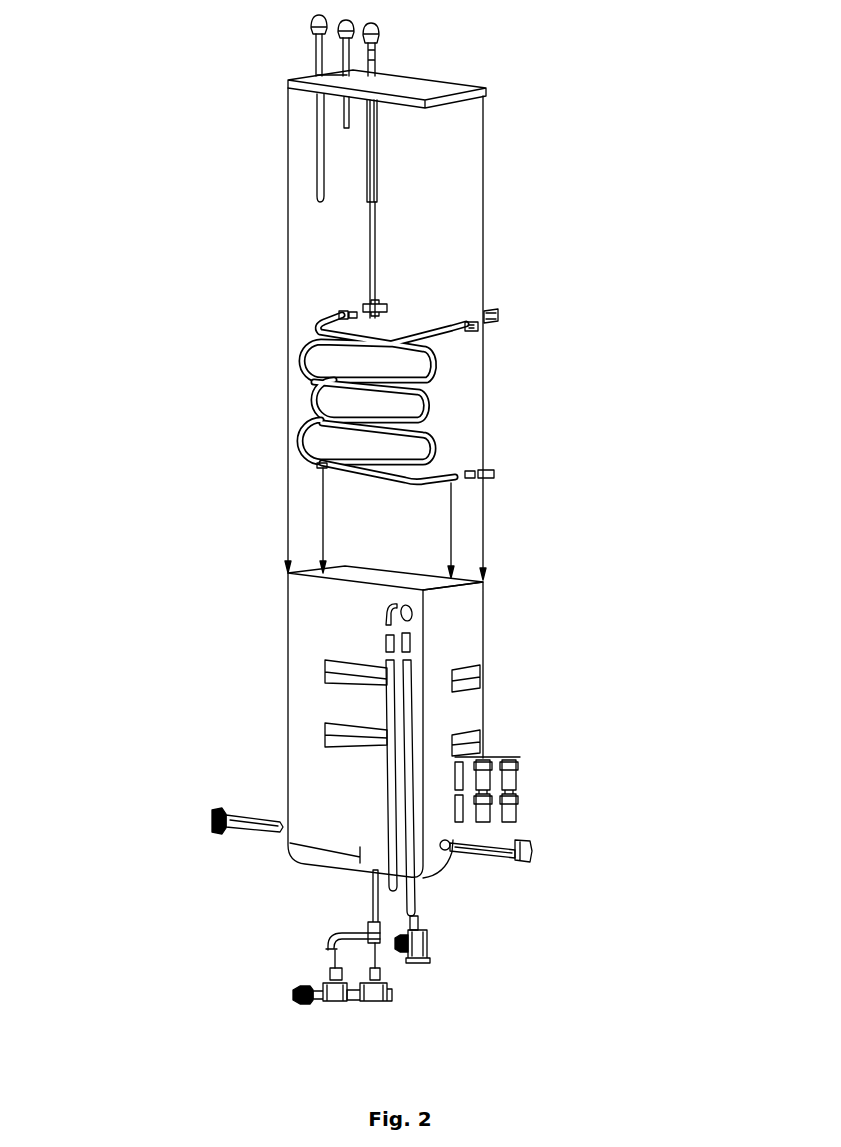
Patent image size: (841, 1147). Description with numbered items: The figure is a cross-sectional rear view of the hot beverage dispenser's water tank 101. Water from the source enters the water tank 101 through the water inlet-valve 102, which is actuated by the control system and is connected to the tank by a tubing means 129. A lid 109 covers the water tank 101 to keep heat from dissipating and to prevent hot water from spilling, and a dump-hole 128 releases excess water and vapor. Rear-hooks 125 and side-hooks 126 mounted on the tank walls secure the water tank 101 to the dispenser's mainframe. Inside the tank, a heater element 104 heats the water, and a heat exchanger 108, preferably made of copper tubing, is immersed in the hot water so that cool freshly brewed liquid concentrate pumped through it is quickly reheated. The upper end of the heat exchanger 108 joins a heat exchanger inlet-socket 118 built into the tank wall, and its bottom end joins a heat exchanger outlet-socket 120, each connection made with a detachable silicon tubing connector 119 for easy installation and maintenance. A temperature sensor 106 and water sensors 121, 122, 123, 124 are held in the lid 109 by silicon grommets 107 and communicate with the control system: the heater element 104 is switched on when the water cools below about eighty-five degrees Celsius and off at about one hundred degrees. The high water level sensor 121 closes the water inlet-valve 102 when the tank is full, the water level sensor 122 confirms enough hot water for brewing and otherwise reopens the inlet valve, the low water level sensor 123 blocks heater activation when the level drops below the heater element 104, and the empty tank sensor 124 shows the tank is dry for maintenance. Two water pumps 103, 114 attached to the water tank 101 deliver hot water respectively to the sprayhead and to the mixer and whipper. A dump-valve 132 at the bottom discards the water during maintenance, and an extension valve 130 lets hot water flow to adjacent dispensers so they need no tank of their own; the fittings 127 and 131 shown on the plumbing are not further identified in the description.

The water tank 101 is at (462, 622).
The water inlet-valve 102 is at (427, 940).
The water pump 103 is at (508, 762).
The heater element 104 is at (532, 853).
The temperature sensor 106 is at (317, 57).
The silicon grommets 107 is at (371, 23).
The heat exchanger 108 is at (440, 482).
The lid 109 is at (287, 80).
The water pump 114 is at (520, 798).
The heat exchanger inlet-socket 118 is at (500, 316).
The detachable silicon tubing connector 119 is at (481, 465).
The heat exchanger outlet-socket 120 is at (495, 468).
The high water level sensor 121 is at (362, 44).
The water level sensor 122 is at (350, 121).
The low water level sensor 123 is at (378, 202).
The empty tank sensor 124 is at (378, 234).
The rear-hooks 125 is at (382, 736).
The side-hooks 126 is at (487, 735).
The inlet pipe 127 is at (388, 793).
The dump-hole 128 is at (384, 613).
The tubing means 129 is at (406, 835).
The extension valve 130 is at (325, 972).
The inlet connector 131 is at (292, 994).
The dump-valve 132 is at (388, 995).